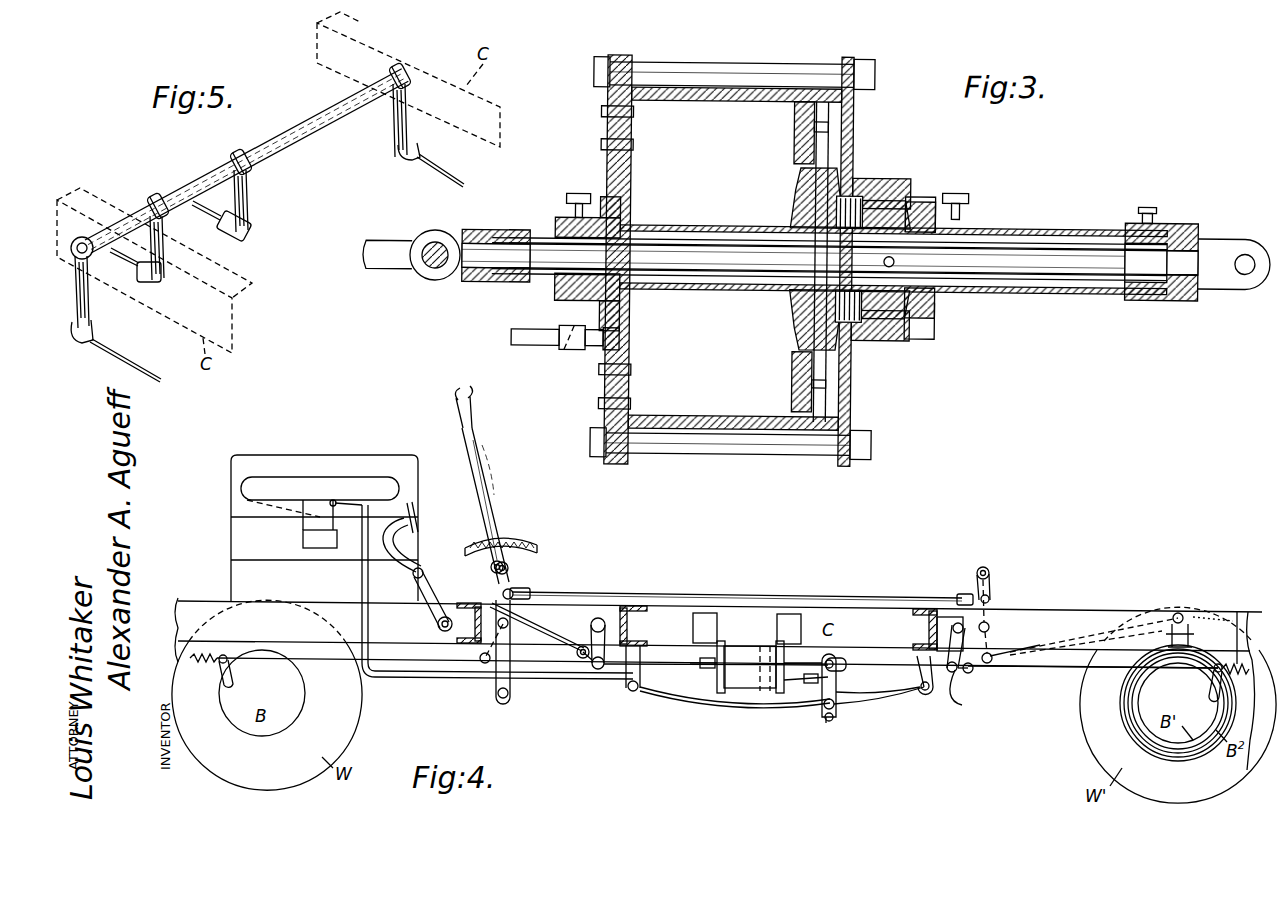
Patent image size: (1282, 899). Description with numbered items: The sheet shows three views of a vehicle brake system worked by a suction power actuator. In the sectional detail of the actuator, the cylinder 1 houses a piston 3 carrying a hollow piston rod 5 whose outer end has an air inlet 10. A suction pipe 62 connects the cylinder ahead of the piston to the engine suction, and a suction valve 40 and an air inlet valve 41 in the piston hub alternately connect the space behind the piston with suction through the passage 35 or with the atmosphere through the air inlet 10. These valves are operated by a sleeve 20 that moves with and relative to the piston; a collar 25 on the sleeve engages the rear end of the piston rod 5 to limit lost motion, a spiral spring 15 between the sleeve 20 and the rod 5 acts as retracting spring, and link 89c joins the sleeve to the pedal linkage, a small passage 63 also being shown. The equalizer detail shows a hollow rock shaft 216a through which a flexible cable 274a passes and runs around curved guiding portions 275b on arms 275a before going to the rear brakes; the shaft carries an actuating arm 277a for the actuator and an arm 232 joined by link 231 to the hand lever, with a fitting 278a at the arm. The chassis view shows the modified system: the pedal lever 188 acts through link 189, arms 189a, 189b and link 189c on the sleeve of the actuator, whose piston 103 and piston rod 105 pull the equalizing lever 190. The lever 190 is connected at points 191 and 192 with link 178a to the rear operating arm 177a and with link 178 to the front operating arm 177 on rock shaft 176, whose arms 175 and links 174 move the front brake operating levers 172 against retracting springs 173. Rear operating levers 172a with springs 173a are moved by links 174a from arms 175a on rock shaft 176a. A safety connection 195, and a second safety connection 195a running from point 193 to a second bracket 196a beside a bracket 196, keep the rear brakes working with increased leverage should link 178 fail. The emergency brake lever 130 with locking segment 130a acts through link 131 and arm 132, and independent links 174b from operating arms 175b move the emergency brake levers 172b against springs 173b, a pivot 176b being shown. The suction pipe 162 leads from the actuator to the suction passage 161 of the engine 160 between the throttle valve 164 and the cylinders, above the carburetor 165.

In FIG. 3, the cylinder 1 is at (718, 90).
In FIG. 3, the piston 3 is at (830, 196).
In FIG. 3, the piston rod 5 is at (1060, 284).
In FIG. 3, the air inlet 10 is at (1210, 275).
In FIG. 3, the spiral spring 15 is at (1060, 228).
In FIG. 3, the sleeve 20 is at (532, 281).
In FIG. 3, the collar 25 is at (1180, 294).
In FIG. 3, the passage 35 is at (792, 282).
In FIG. 3, the suction valve 40 is at (796, 303).
In FIG. 3, the air inlet valve 41 is at (908, 326).
In FIG. 3, the suction pipe 62 is at (520, 340).
In FIG. 3, the passage 63 is at (565, 348).
In FIG. 3, the link 89c is at (372, 246).
In FIG. 5, the hollow rock shaft 216a is at (338, 102).
In FIG. 5, the arms 275a is at (396, 124).
In FIG. 5, the curved guiding portions 275b is at (420, 152).
In FIG. 5, the flexible cable 274a is at (418, 160).
In FIG. 5, the link 231 is at (222, 208).
In FIG. 5, the arm 232 is at (250, 208).
In FIG. 5, the actuating arm 277a is at (160, 247).
In FIG. 5, the block 278a is at (128, 258).
In FIG. 4, the internal combustion engine 160 is at (298, 468).
In FIG. 4, the suction passage 161 is at (293, 487).
In FIG. 4, the throttle valve 164 is at (247, 500).
In FIG. 4, the carburetor 165 is at (303, 540).
In FIG. 4, the operating levers 172 is at (232, 672).
In FIG. 4, the retracting springs 173 is at (198, 663).
In FIG. 4, the links 174 is at (402, 661).
In FIG. 4, the arms 175 is at (483, 654).
In FIG. 4, the rock shaft 176 is at (491, 567).
In FIG. 4, the operating arm 177 is at (511, 660).
In FIG. 4, the pedal lever 188 is at (394, 557).
In FIG. 4, the emergency brake lever 130 is at (497, 528).
In FIG. 4, the locking segment 130a is at (541, 546).
In FIG. 4, the link 131 is at (733, 598).
In FIG. 4, the link 189 is at (530, 627).
In FIG. 4, the arm 189a is at (596, 630).
In FIG. 4, the arm 189b is at (583, 660).
In FIG. 4, the link 189c is at (666, 661).
In FIG. 4, the suction pipe 162 is at (552, 680).
In FIG. 4, the second bracket 196a is at (632, 691).
In FIG. 4, the link 178 is at (690, 698).
In FIG. 4, the piston 103 is at (767, 638).
In FIG. 4, the piston rod 105 is at (795, 666).
In FIG. 4, the second safety connection 195a is at (786, 683).
In FIG. 4, the equalizing lever 190 is at (838, 668).
In FIG. 4, the pivot point 191 is at (826, 721).
In FIG. 4, the pivot point 192 is at (830, 723).
In FIG. 4, the point 193 is at (836, 707).
In FIG. 4, the safety connection 195 is at (882, 706).
In FIG. 4, the link 178a is at (898, 691).
In FIG. 4, the link 196 is at (925, 666).
In FIG. 4, the rock shaft 176a is at (930, 628).
In FIG. 4, the operating arm 177a is at (965, 705).
In FIG. 4, the arm 132 is at (972, 593).
In FIG. 4, the pivot 176b is at (988, 575).
In FIG. 4, the operating arms 175b is at (988, 647).
In FIG. 4, the arms 175a is at (972, 672).
In FIG. 4, the independent links 174b is at (1013, 651).
In FIG. 4, the links 174a is at (1041, 671).
In FIG. 4, the operating lever 172b is at (1152, 607).
In FIG. 4, the retracting spring 173b is at (1187, 613).
In FIG. 4, the retracting springs 173a is at (1237, 612).
In FIG. 4, the operating levers 172a is at (1214, 672).